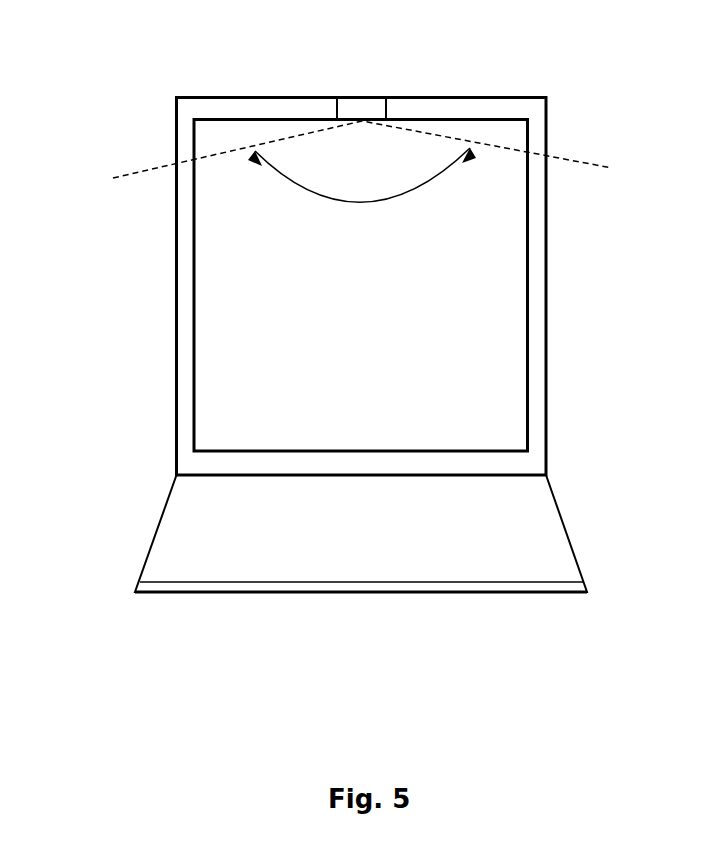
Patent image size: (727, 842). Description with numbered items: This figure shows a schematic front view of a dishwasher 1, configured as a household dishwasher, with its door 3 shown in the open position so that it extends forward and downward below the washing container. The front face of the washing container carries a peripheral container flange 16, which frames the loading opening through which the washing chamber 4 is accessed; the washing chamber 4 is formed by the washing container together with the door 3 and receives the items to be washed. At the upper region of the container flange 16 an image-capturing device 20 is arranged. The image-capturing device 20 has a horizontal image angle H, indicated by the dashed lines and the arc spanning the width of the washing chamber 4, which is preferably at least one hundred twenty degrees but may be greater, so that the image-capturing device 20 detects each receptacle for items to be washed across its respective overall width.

The dishwasher 1 is at (92, 78).
The peripheral container flange 16 is at (246, 96).
The image-capturing device 20 is at (355, 96).
The washing chamber 4 is at (366, 310).
The door 3 is at (563, 527).